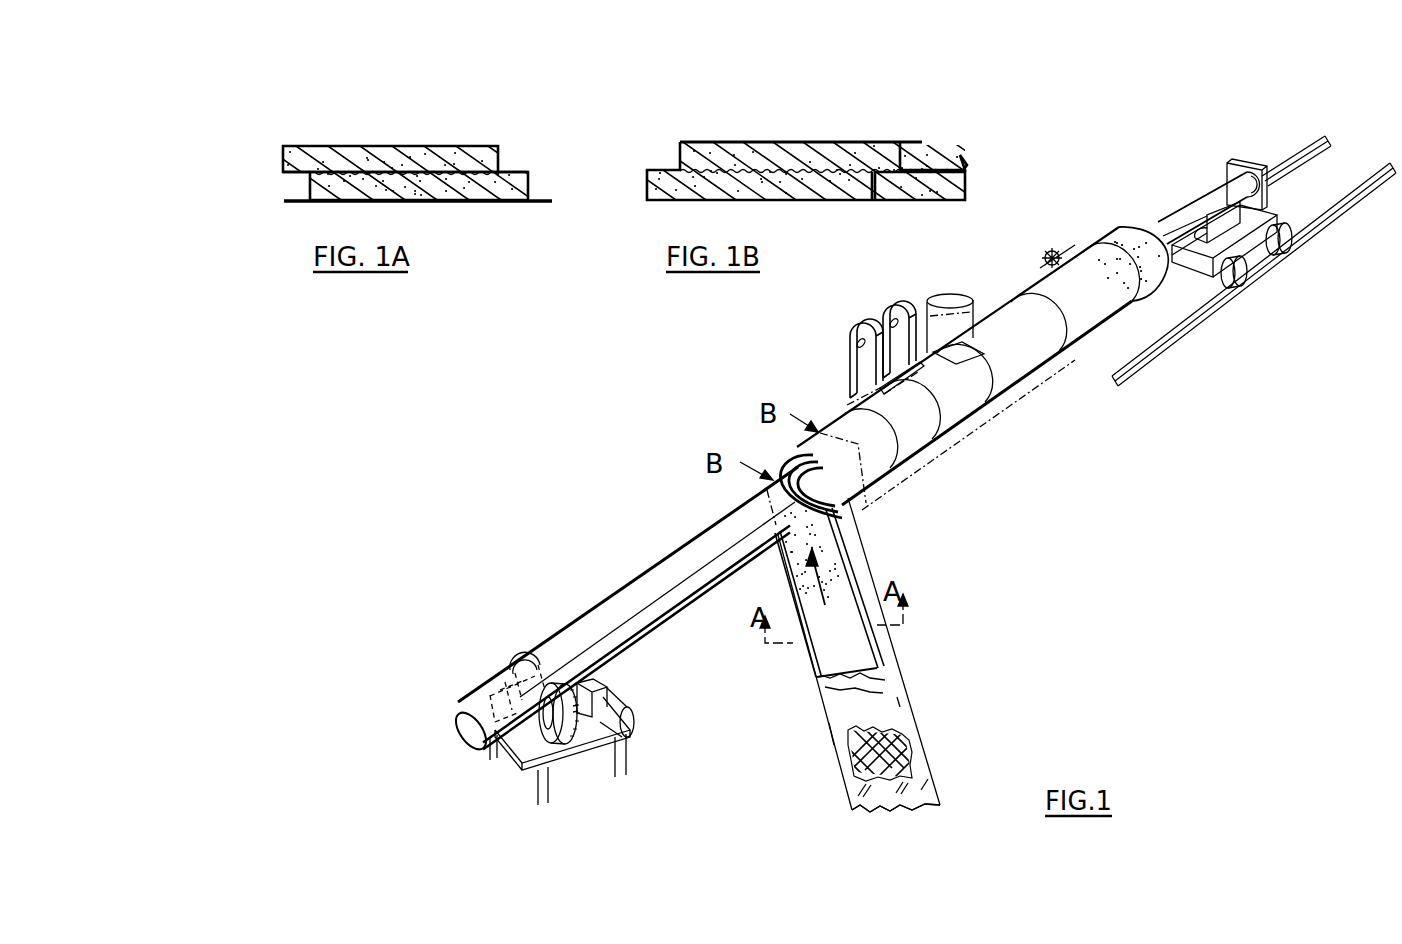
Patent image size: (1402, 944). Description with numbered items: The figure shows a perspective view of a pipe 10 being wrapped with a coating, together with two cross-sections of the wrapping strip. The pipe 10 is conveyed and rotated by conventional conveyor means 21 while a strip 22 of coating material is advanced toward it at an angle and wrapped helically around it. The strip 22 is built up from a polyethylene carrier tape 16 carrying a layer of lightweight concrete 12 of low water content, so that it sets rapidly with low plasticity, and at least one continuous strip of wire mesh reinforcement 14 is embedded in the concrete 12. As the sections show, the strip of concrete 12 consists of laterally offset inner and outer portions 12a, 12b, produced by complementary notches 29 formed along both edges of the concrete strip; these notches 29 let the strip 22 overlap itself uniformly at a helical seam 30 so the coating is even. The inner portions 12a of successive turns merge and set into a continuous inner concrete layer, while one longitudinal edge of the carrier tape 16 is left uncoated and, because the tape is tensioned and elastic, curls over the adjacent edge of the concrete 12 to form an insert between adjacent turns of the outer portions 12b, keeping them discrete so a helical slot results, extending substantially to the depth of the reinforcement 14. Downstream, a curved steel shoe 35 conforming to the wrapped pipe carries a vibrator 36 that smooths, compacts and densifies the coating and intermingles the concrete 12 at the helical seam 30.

In FIG. 1, the pipe 10 is at (640, 590).
In FIG. 1, the lightweight concrete 12 is at (856, 648).
In FIG. 1A, the inner portion of concrete strip 12a is at (418, 150).
In FIG. 1B, the inner portion of concrete strip 12a is at (842, 204).
In FIG. 1A, the outer portion of concrete strip 12b is at (500, 200).
In FIG. 1B, the outer portion of concrete strip 12b is at (830, 150).
In FIG. 1A, the reinforcement 14 is at (520, 174).
In FIG. 1B, the reinforcement 14 is at (768, 165).
In FIG. 1, the reinforcement 14 is at (847, 728).
In FIG. 1A, the carrier tape 16 is at (312, 204).
In FIG. 1B, the carrier tape 16 is at (697, 143).
In FIG. 1, the carrier tape 16 is at (852, 797).
In FIG. 1, the conveyor means 21 is at (522, 758).
In FIG. 1, the strip of coating material 22 is at (903, 691).
In FIG. 1A, the notches 29 is at (500, 166).
In FIG. 1, the helical seam 30 is at (1045, 345).
In FIG. 1, the shoe 35 is at (1015, 400).
In FIG. 1, the vibrator 36 is at (960, 290).